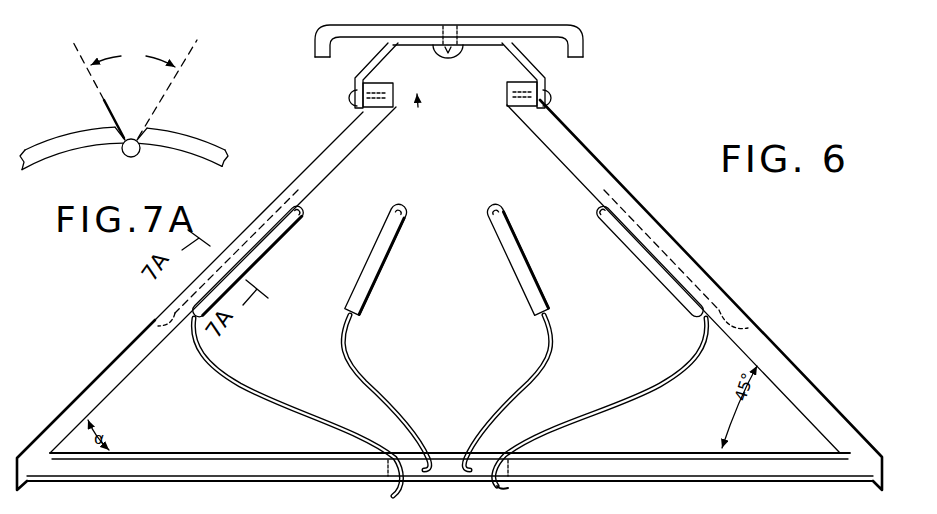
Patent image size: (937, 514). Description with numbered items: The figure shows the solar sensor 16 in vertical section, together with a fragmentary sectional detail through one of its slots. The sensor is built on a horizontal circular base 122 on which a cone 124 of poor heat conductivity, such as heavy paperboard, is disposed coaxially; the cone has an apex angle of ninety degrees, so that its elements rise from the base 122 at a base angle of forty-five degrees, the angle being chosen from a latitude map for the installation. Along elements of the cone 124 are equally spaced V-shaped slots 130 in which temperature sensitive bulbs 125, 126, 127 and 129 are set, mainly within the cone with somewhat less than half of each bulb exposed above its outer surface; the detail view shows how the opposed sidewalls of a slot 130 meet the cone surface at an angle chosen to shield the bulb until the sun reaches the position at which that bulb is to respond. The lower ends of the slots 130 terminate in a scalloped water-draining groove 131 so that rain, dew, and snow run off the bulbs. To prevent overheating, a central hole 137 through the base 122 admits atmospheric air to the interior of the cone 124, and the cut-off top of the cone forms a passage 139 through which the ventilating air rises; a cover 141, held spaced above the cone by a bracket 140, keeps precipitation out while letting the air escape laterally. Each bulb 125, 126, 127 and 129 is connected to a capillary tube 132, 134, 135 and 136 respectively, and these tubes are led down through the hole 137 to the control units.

In FIG. 6, the sensor 16 is at (618, 173).
In FIG. 6, the circular base 122 is at (800, 468).
In FIG. 6, the cone 124 is at (342, 147).
In FIG. 7A, the cone 124 is at (177, 133).
In FIG. 6, the temperature sensitive bulb 125 is at (293, 223).
In FIG. 7A, the temperature sensitive bulb 125 is at (123, 153).
In FIG. 6, the temperature sensitive bulb 126 is at (392, 233).
In FIG. 6, the temperature sensitive bulb 127 is at (520, 252).
In FIG. 6, the temperature sensitive bulb 129 is at (656, 272).
In FIG. 6, the V-shaped slot 130 is at (688, 266).
In FIG. 7A, the V-shaped slot 130 is at (127, 128).
In FIG. 6, the water-draining groove 131 is at (168, 318).
In FIG. 6, the capillary tube 132 is at (302, 400).
In FIG. 6, the capillary tube 134 is at (358, 366).
In FIG. 6, the capillary tube 135 is at (510, 390).
In FIG. 6, the capillary tube 136 is at (605, 405).
In FIG. 6, the central hole 137 is at (503, 481).
In FIG. 6, the passage 139 is at (418, 108).
In FIG. 6, the bracket 140 is at (512, 52).
In FIG. 6, the cover 141 is at (585, 39).